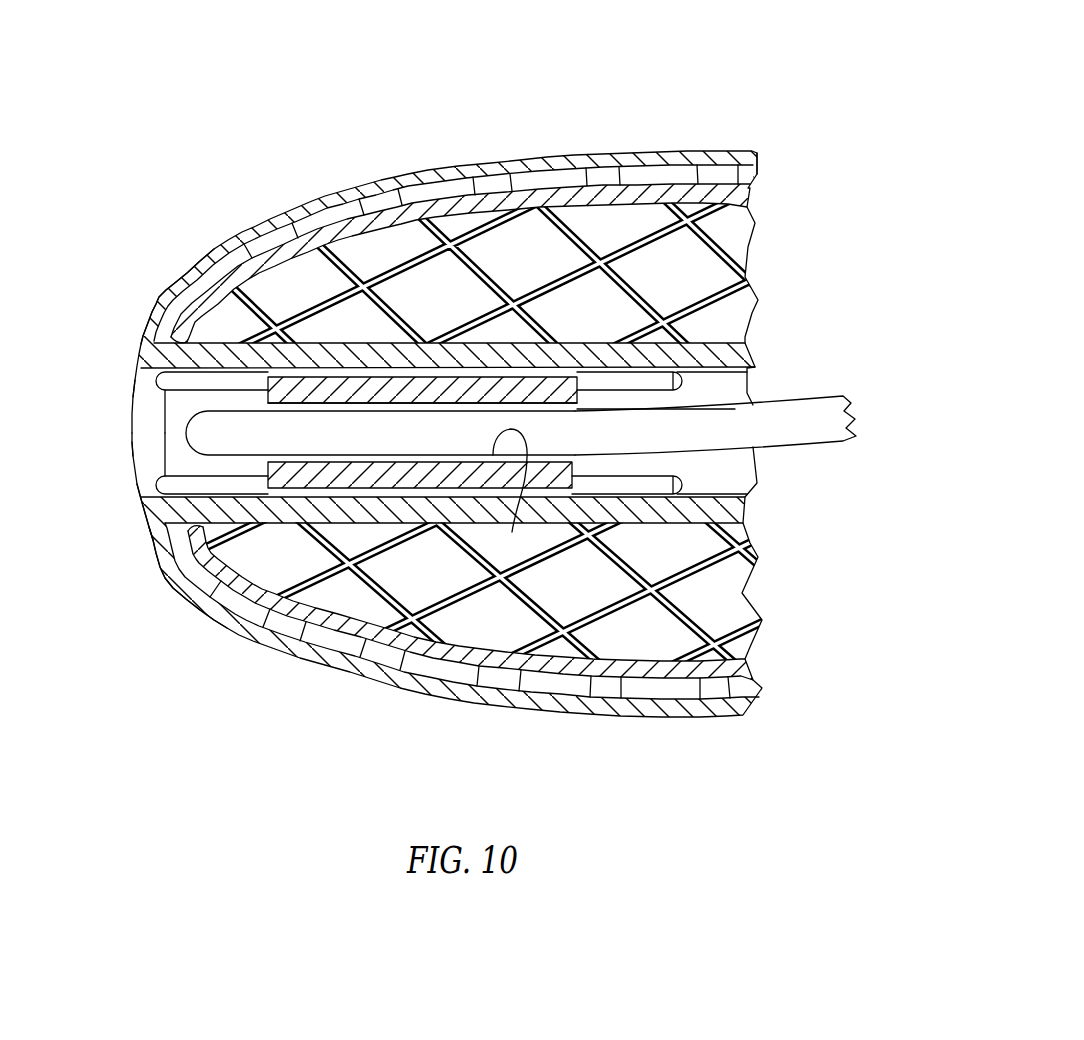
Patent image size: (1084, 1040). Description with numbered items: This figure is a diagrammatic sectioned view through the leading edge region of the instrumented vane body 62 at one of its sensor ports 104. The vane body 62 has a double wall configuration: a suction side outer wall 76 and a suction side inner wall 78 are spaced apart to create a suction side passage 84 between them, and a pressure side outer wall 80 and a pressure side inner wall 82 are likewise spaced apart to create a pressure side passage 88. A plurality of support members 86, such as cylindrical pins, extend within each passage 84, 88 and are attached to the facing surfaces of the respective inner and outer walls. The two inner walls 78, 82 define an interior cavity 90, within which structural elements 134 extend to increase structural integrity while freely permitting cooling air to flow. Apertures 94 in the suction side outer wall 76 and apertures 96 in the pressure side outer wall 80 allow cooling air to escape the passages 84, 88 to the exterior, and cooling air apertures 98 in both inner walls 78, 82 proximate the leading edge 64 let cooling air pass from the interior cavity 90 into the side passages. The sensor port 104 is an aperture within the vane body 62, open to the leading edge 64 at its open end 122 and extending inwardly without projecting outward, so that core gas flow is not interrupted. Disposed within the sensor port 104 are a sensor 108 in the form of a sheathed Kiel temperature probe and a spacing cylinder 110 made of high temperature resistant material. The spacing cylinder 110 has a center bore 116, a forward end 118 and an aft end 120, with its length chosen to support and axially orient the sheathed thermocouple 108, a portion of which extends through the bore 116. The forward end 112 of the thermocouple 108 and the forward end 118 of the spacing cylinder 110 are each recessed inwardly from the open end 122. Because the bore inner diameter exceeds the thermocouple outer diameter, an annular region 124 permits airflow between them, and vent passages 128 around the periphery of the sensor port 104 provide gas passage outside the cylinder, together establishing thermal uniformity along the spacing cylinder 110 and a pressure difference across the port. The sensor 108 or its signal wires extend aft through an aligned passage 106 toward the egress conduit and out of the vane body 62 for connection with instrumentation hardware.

The instrumented vane body 62 is at (832, 98).
The leading edge 64 is at (122, 412).
The suction side outer wall 76 is at (695, 150).
The suction side inner wall 78 is at (726, 192).
The pressure side outer wall 80 is at (689, 718).
The pressure side inner wall 82 is at (724, 666).
The suction side passage 84 is at (306, 227).
The support members 86 is at (497, 178).
The pressure side passage 88 is at (549, 690).
The interior cavity 90 is at (712, 260).
The apertures 94 is at (202, 267).
The apertures 96 is at (203, 597).
The cooling air apertures 98 is at (236, 273).
The sensor port 104 is at (142, 437).
The passage 106 is at (730, 474).
The sensor 108 is at (491, 416).
The spacing cylinder 110 is at (447, 376).
The forward end 112 is at (165, 412).
The center bore 116 is at (512, 494).
The forward end 118 is at (165, 525).
The aft end 120 is at (580, 376).
The open end 122 is at (163, 455).
The annular region 124 is at (349, 405).
The vent passages 128 is at (155, 382).
The structural elements 134 is at (710, 568).